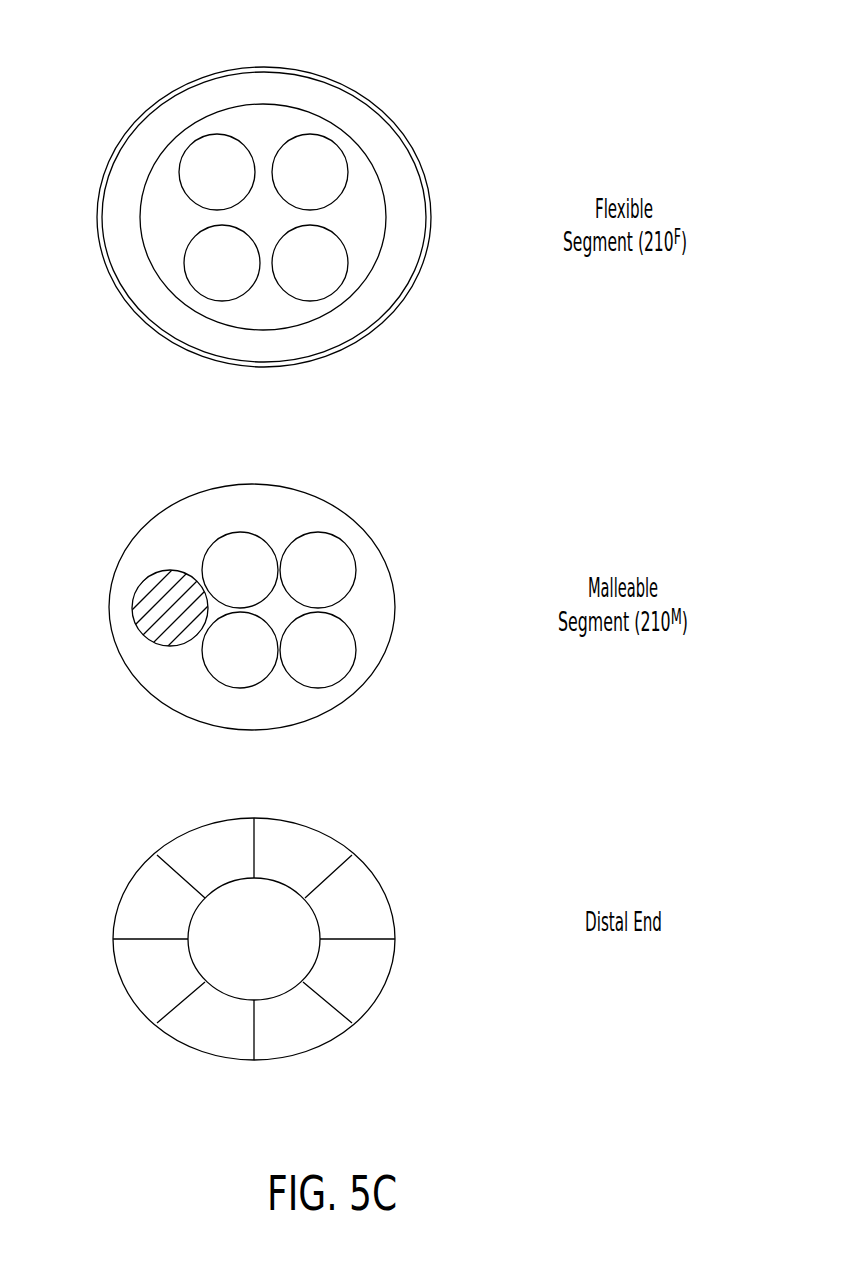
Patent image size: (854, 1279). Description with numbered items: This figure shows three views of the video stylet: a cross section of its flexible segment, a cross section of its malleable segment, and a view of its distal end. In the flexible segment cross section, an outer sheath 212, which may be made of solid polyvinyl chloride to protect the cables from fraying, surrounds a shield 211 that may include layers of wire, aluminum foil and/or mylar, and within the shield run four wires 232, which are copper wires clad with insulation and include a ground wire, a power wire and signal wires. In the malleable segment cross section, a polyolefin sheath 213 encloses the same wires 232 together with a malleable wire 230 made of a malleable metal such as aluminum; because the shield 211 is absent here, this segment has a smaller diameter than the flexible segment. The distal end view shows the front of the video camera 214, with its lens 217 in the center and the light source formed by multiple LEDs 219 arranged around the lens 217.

The shield 211 is at (147, 177).
The sheath 212 is at (333, 80).
The sheath 213 is at (333, 505).
The video camera 214 is at (132, 878).
The lens 217 is at (322, 923).
The LEDs 219 is at (307, 848).
The malleable wire 230 is at (157, 573).
The wires 232 is at (207, 133).